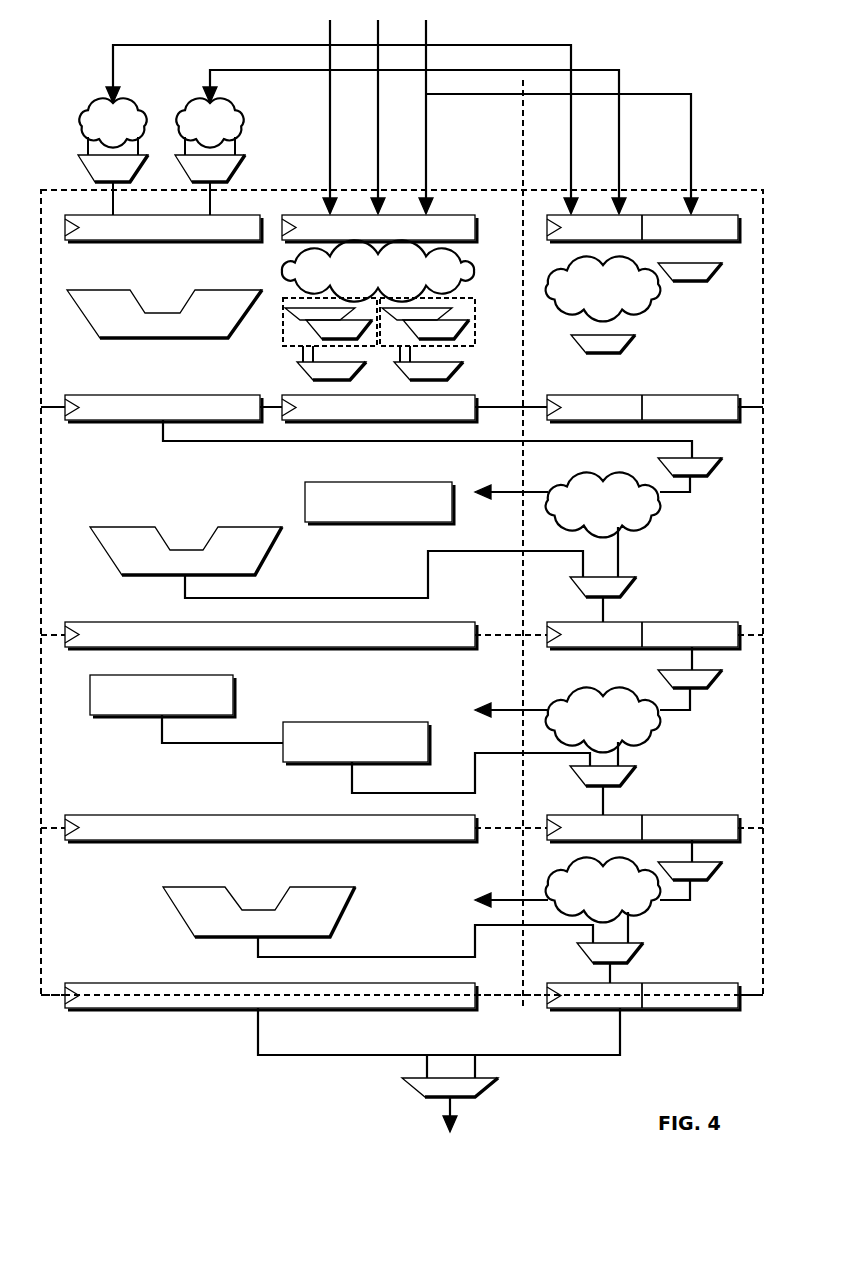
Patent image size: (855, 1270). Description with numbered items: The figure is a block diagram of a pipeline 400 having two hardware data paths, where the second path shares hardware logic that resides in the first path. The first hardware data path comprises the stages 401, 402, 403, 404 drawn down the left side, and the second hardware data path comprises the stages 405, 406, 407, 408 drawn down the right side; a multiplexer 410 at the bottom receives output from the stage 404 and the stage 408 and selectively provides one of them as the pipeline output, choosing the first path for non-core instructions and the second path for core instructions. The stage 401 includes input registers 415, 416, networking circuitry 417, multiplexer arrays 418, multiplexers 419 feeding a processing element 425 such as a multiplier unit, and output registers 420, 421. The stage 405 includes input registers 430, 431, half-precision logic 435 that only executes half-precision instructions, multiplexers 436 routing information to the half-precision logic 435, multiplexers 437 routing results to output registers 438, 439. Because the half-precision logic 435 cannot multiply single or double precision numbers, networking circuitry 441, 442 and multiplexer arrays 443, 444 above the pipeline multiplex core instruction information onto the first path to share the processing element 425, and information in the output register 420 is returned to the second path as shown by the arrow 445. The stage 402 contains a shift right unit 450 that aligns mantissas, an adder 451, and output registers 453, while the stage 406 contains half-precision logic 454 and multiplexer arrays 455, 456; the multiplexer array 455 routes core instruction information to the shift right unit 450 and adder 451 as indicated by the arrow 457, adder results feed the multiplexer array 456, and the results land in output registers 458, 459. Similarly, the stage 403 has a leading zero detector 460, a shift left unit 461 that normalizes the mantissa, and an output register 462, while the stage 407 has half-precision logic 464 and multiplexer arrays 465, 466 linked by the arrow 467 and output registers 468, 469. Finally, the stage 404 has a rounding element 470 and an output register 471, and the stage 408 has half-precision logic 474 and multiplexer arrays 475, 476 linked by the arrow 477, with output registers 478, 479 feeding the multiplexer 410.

The pipeline 400 is at (745, 44).
The stage 401 is at (40, 287).
The stage 402 is at (40, 577).
The stage 403 is at (40, 767).
The stage 404 is at (40, 937).
The stage 405 is at (764, 287).
The stage 406 is at (764, 577).
The stage 407 is at (764, 767).
The stage 408 is at (764, 937).
The multiplexer 410 is at (430, 1100).
The input register 415 is at (130, 243).
The input register 416 is at (282, 243).
The networking circuitry 417 is at (378, 270).
The multiplexer arrays 418 is at (475, 330).
The multiplexers 419 is at (433, 381).
The output register 420 is at (145, 395).
The output register 421 is at (288, 395).
The processing element 425 is at (164, 314).
The input register 430 is at (582, 243).
The input register 431 is at (700, 243).
The half-precision logic 435 is at (603, 288).
The multiplexers 436 is at (692, 282).
The multiplexers 437 is at (620, 334).
The output register 438 is at (602, 395).
The output register 439 is at (680, 395).
The networking circuitry 441 is at (112, 126).
The networking circuitry 442 is at (209, 126).
The multiplexer array 443 is at (113, 185).
The multiplexer array 444 is at (210, 185).
The arrow 445 is at (212, 443).
The shift right unit 450 is at (379, 503).
The adder 451 is at (336, 562).
The output registers 453 is at (165, 622).
The half-precision logic 454 is at (603, 524).
The multiplexer array 455 is at (705, 478).
The multiplexer array 456 is at (638, 585).
The arrow 457 is at (532, 490).
The output register 458 is at (597, 622).
The output register 459 is at (695, 622).
The leading zero detector 460 is at (186, 709).
The shift left unit 461 is at (436, 757).
The output register 462 is at (268, 815).
The half-precision logic 464 is at (603, 726).
The multiplexer array 465 is at (703, 690).
The multiplexer array 466 is at (635, 782).
The arrow 467 is at (530, 707).
The output register 468 is at (590, 815).
The output register 469 is at (690, 815).
The rounding element 470 is at (378, 922).
The output register 471 is at (165, 983).
The half-precision logic 474 is at (603, 900).
The multiplexer array 475 is at (703, 882).
The multiplexer array 476 is at (645, 950).
The arrow 477 is at (530, 897).
The output register 478 is at (598, 983).
The output register 479 is at (695, 983).